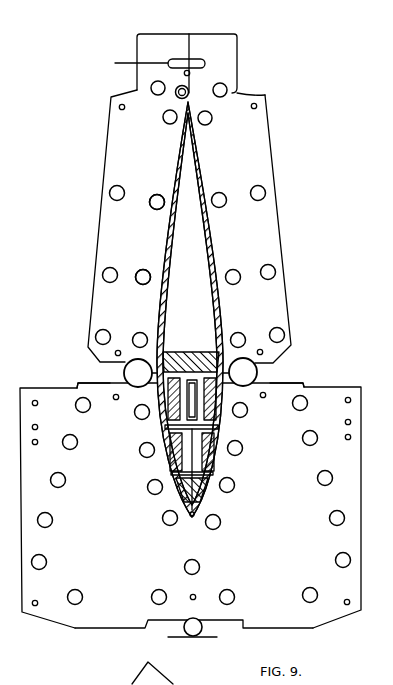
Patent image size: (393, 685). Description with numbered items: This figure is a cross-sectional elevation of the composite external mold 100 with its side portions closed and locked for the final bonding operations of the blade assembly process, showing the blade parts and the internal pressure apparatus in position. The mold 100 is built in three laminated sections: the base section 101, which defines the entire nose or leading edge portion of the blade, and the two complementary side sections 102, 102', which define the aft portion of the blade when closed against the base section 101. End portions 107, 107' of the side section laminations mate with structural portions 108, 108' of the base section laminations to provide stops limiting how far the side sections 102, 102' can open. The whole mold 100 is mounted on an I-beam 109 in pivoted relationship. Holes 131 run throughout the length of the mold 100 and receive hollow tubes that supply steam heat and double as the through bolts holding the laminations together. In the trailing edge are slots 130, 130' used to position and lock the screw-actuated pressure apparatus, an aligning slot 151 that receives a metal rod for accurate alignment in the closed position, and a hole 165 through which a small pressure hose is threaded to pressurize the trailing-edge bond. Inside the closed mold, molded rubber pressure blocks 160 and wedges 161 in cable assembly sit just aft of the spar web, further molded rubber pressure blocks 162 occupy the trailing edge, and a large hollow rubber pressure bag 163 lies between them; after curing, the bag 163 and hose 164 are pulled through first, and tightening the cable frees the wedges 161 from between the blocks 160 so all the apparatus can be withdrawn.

The composite external mold 100 is at (56, 334).
The base section 101 is at (113, 617).
The side section 102 is at (255, 228).
The side section 102' is at (119, 227).
The end portion 107 is at (274, 369).
The end portion 107' is at (102, 372).
The structural portion 108 is at (283, 413).
The structural portion 108' is at (96, 413).
The I-beam 109 is at (192, 636).
The slot 130 is at (208, 63).
The slot 130' is at (124, 71).
The holes 131 is at (150, 203).
The aligning slot 151 is at (232, 76).
The molded rubber pressure blocks 160 is at (210, 348).
The wedges 161 is at (193, 356).
The molded rubber pressure blocks 162 is at (200, 145).
The hollow rubber pressure hose or bag 163 is at (200, 267).
The hose 164 is at (250, 94).
The hole 165 is at (175, 91).